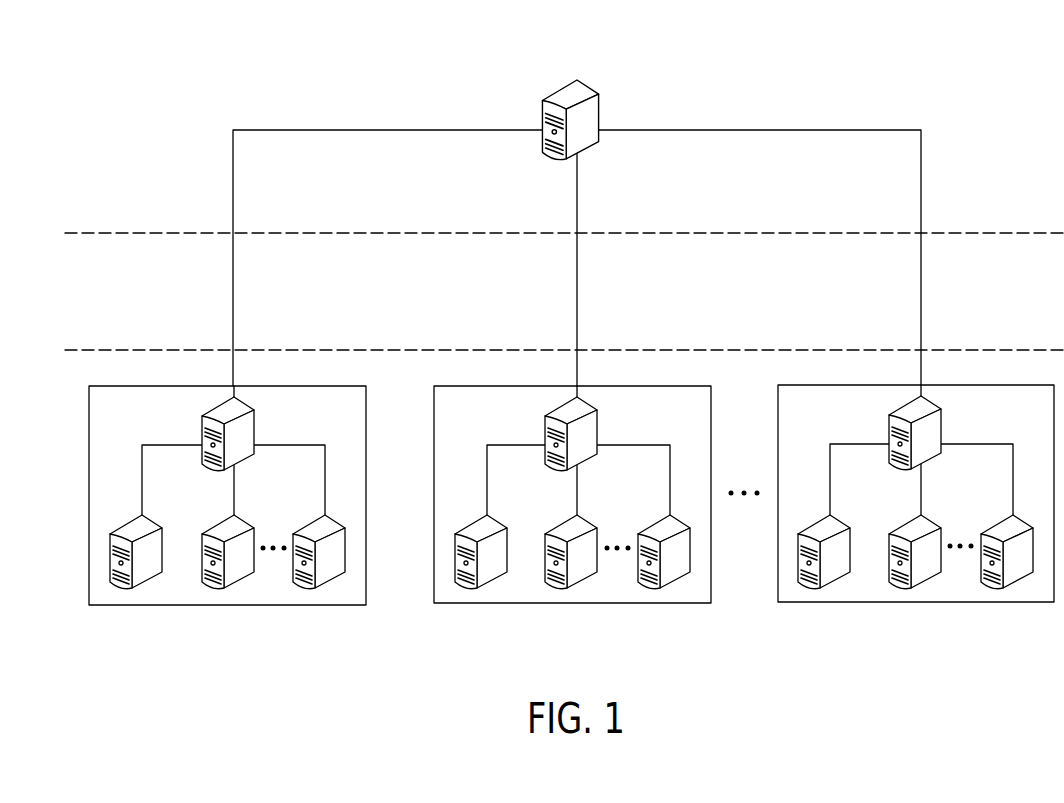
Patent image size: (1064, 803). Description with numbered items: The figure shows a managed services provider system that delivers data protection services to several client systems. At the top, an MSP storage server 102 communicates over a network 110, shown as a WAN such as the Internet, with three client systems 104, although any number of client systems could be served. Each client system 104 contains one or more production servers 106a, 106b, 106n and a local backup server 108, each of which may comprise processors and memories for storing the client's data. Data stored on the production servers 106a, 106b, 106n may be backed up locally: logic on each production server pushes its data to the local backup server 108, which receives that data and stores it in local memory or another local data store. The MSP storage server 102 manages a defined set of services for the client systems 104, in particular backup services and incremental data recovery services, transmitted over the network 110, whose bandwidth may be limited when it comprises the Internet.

The MSP storage server 102 is at (578, 80).
The client system 104 is at (158, 386).
The production server 106a is at (139, 585).
The production server 106b is at (231, 585).
The production server 106n is at (322, 585).
The local backup server 108 is at (254, 427).
The network 110 is at (132, 246).